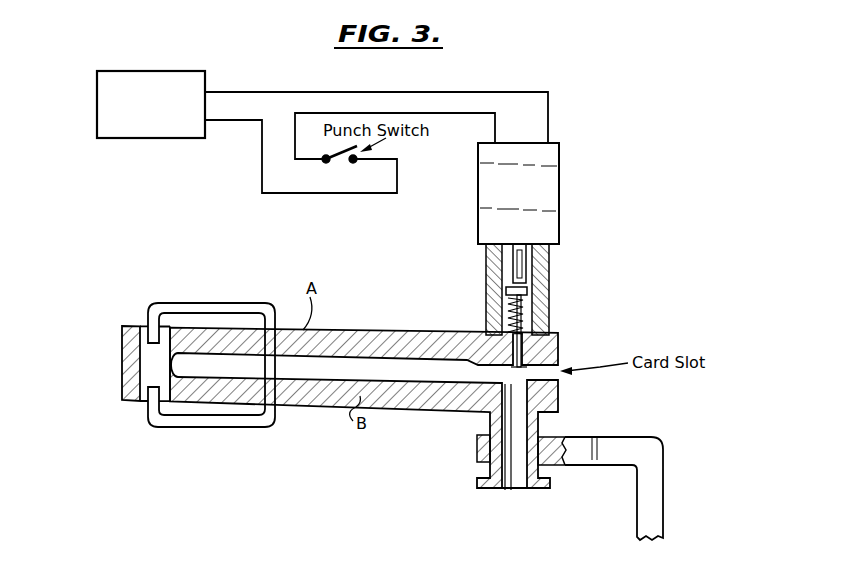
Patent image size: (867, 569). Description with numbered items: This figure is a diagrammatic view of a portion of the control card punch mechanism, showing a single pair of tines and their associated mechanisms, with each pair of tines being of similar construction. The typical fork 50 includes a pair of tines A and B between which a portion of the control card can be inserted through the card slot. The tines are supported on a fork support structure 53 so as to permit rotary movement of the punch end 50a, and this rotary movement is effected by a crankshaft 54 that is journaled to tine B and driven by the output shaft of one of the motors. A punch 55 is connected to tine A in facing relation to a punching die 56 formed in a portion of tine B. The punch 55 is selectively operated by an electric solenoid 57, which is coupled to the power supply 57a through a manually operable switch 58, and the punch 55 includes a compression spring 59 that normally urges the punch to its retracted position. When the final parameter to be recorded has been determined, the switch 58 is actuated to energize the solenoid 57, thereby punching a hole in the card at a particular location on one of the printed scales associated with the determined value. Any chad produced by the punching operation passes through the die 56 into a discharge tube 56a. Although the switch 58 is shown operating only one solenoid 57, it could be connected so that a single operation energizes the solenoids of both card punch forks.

The fork 50 is at (364, 338).
The punch end 50a is at (560, 350).
The fork support structure 53 is at (222, 418).
The crankshaft 54 is at (655, 477).
The punch 55 is at (545, 312).
The punching die 56 is at (503, 381).
The discharge tube 56a is at (516, 483).
The electric solenoid 57 is at (547, 201).
The power supply 57a is at (97, 112).
The manually operable switch 58 is at (338, 158).
The compression spring 59 is at (506, 307).